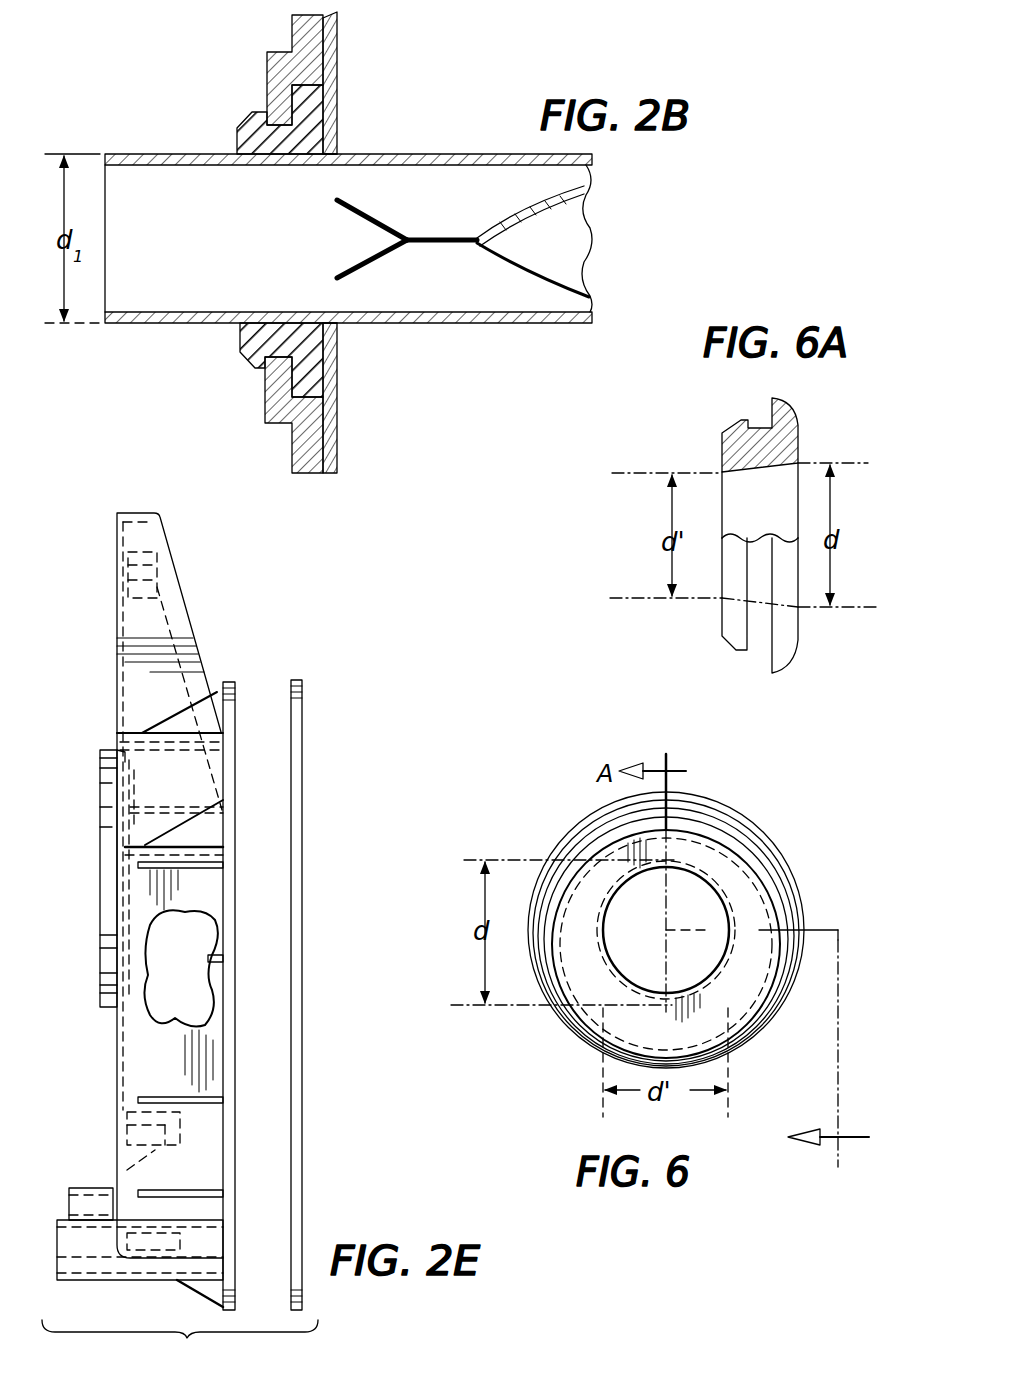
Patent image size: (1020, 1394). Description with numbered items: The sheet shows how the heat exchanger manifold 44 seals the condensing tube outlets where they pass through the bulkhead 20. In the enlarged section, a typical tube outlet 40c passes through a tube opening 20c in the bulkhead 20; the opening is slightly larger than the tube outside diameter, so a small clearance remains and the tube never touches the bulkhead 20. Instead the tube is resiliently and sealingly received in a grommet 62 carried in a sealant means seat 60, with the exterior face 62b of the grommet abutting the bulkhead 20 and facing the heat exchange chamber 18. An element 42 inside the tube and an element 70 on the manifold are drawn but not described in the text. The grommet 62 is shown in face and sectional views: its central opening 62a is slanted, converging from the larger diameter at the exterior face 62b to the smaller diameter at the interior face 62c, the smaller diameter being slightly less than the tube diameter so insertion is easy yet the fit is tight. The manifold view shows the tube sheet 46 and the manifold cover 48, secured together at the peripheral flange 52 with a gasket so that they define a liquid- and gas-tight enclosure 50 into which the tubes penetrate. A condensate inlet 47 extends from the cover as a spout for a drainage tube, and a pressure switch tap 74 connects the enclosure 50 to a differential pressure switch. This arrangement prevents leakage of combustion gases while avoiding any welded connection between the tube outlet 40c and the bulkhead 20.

In FIG. 2B, the heat exchange chamber 18 is at (482, 98).
In FIG. 2B, the bulkhead 20 is at (342, 433).
In FIG. 2B, the tube openings 20c is at (337, 153).
In FIG. 2B, the tube outlet 40c is at (138, 153).
In FIG. 2B, the vane / inner element 42 is at (560, 245).
In FIG. 2B, the sealant means seat 60 is at (267, 80).
In FIG. 2B, the grommet 62 is at (240, 135).
In FIG. 6A, the grommet 62 is at (718, 447).
In FIG. 6, the grommet 62 is at (783, 833).
In FIG. 6A, the central opening 62a is at (782, 517).
In FIG. 6, the central opening 62a is at (748, 901).
In FIG. 6A, the exterior face 62b is at (804, 643).
In FIG. 6A, the interior face 62c is at (716, 612).
In FIG. 2E, the heat exchanger manifold 44 is at (182, 1339).
In FIG. 2E, the tube sheet 46 is at (308, 906).
In FIG. 2E, the condensate inlet 47 is at (93, 1257).
In FIG. 2E, the manifold cover 48 is at (112, 1084).
In FIG. 2E, the enclosure 50 is at (187, 976).
In FIG. 2E, the peripheral flange 52 is at (233, 1165).
In FIG. 2E, the wedge 70 is at (143, 618).
In FIG. 2E, the pressure switch tap 74 is at (88, 1197).